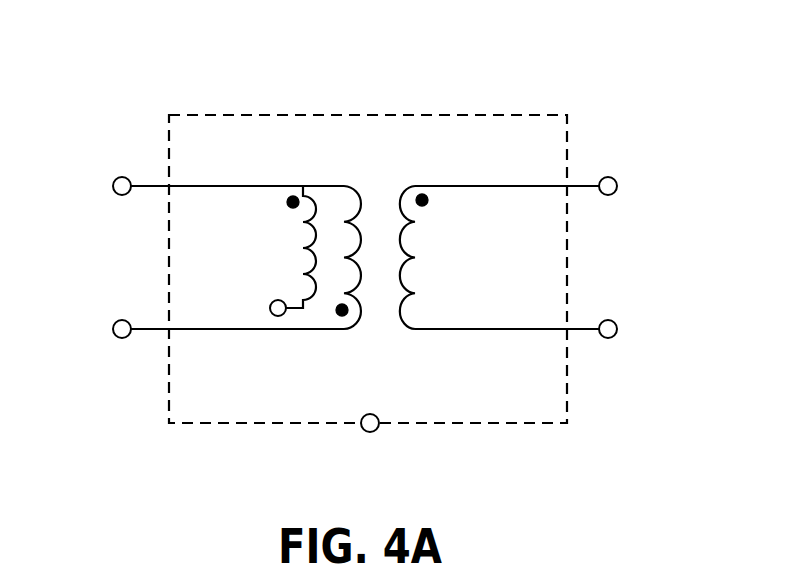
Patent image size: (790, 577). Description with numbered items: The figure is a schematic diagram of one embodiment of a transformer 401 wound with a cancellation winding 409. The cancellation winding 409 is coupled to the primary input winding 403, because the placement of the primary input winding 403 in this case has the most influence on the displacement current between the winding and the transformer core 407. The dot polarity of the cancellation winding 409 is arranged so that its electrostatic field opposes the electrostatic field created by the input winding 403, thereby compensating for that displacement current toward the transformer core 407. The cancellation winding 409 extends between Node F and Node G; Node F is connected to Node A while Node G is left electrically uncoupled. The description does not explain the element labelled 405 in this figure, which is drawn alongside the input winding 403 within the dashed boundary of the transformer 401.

The transformer 401 is at (555, 40).
The primary input winding 403 is at (238, 333).
The output winding 405 is at (508, 330).
The transformer core 407 is at (275, 423).
The cancellation winding 409 is at (192, 258).